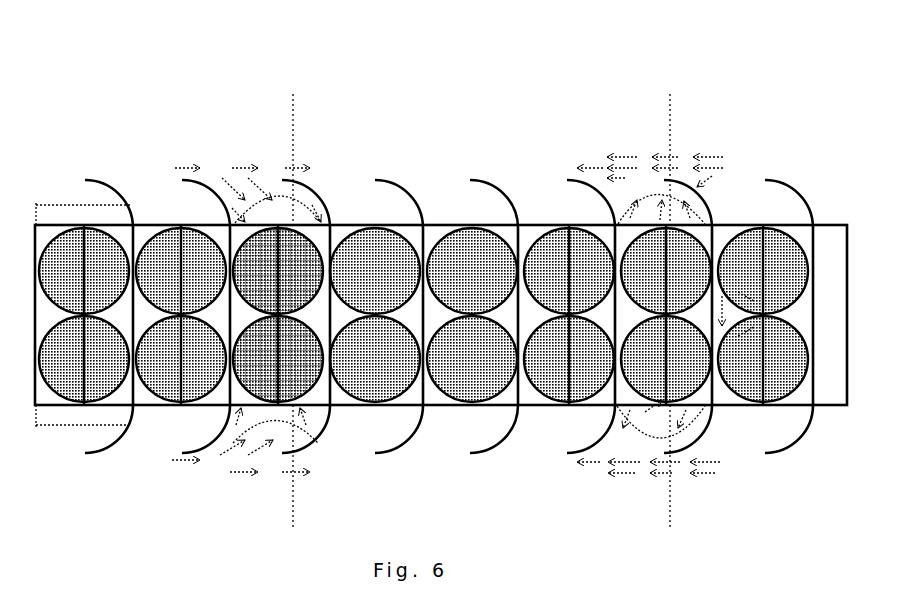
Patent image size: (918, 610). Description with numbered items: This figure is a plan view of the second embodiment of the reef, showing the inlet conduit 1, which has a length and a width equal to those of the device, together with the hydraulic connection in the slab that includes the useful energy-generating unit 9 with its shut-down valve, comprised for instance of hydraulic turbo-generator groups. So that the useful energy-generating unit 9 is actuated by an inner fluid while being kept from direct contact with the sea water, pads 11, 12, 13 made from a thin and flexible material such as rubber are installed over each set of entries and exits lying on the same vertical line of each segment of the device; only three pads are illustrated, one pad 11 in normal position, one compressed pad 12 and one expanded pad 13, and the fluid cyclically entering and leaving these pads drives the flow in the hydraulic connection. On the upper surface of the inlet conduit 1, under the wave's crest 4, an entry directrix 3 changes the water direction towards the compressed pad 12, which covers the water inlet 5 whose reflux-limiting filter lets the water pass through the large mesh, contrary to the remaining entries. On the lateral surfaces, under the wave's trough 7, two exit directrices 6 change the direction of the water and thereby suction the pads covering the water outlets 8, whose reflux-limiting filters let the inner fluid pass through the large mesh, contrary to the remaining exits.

The inlet conduit 1 is at (841, 397).
The entry directrix 3 is at (319, 192).
The wave's crest 4 is at (300, 93).
The water inlet provided with a reflux-limiting filter 5 is at (229, 233).
The exit directrix 6 is at (657, 184).
The wave's trough 7 is at (666, 93).
The water outlet provided with a reflux-limiting filter 8 is at (661, 317).
The useful energy-generating unit with shut-down valve 9 is at (718, 320).
The pad in normal position 11 is at (72, 204).
The compressed pad 12 is at (246, 320).
The expanded pad 13 is at (650, 315).